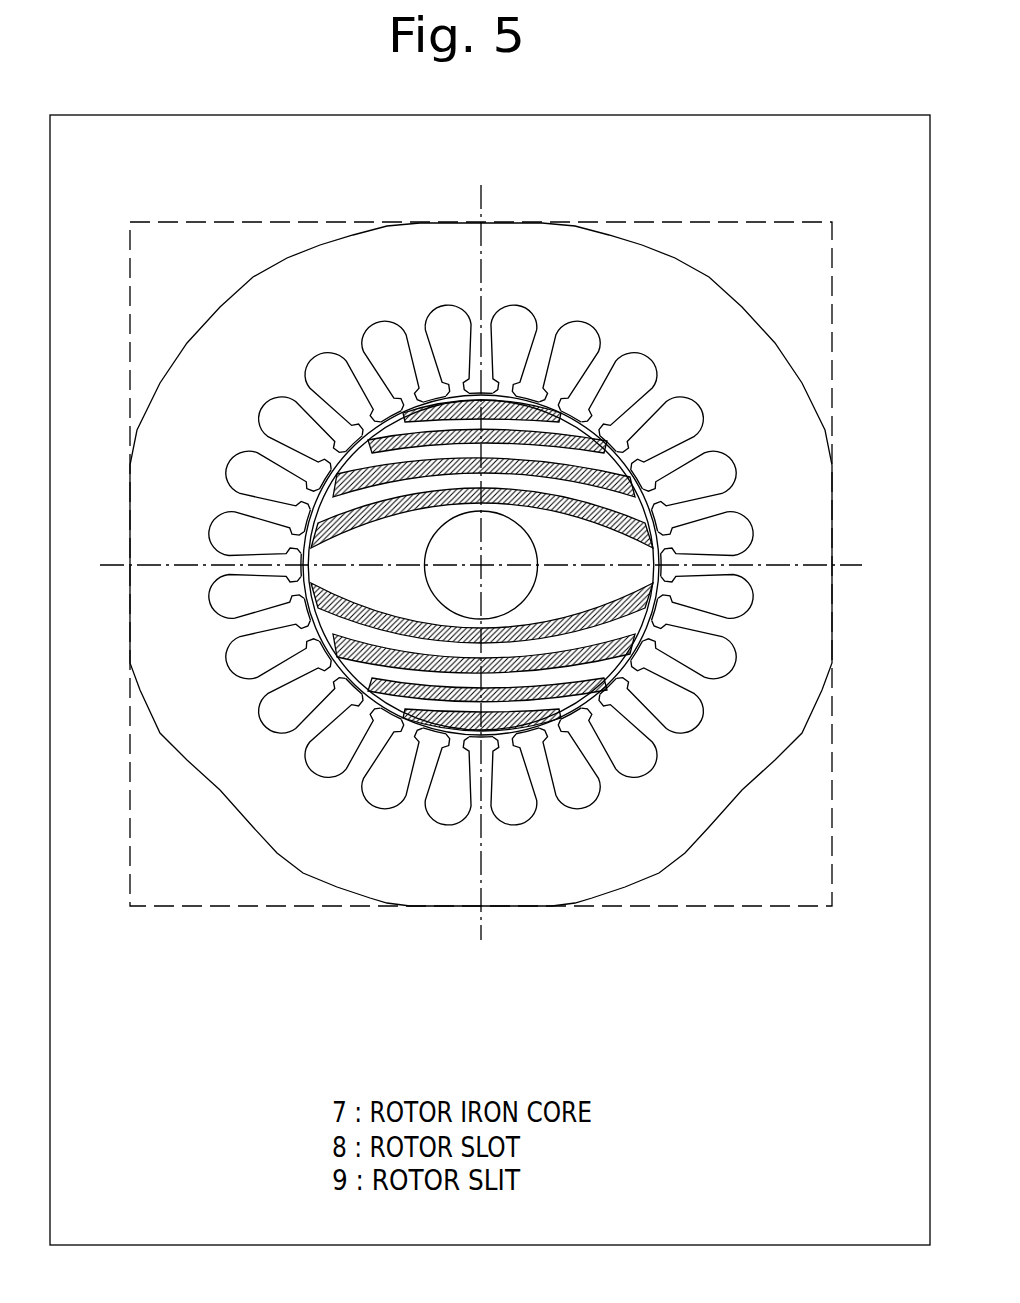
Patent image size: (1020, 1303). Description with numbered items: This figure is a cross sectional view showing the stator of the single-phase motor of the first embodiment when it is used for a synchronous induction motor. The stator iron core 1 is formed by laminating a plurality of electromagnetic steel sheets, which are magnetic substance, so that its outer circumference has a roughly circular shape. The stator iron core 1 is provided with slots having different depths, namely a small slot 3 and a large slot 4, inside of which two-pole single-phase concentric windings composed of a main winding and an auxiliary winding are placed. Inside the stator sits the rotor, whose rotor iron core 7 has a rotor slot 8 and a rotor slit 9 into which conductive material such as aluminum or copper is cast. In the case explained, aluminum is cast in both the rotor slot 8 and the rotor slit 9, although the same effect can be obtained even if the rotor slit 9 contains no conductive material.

The stator iron core 1 is at (597, 245).
The small slot 3 is at (755, 597).
The large slot 4 is at (650, 772).
The rotor iron core 7 is at (340, 675).
The rotor slot 8 is at (588, 705).
The rotor slit 9 is at (407, 493).